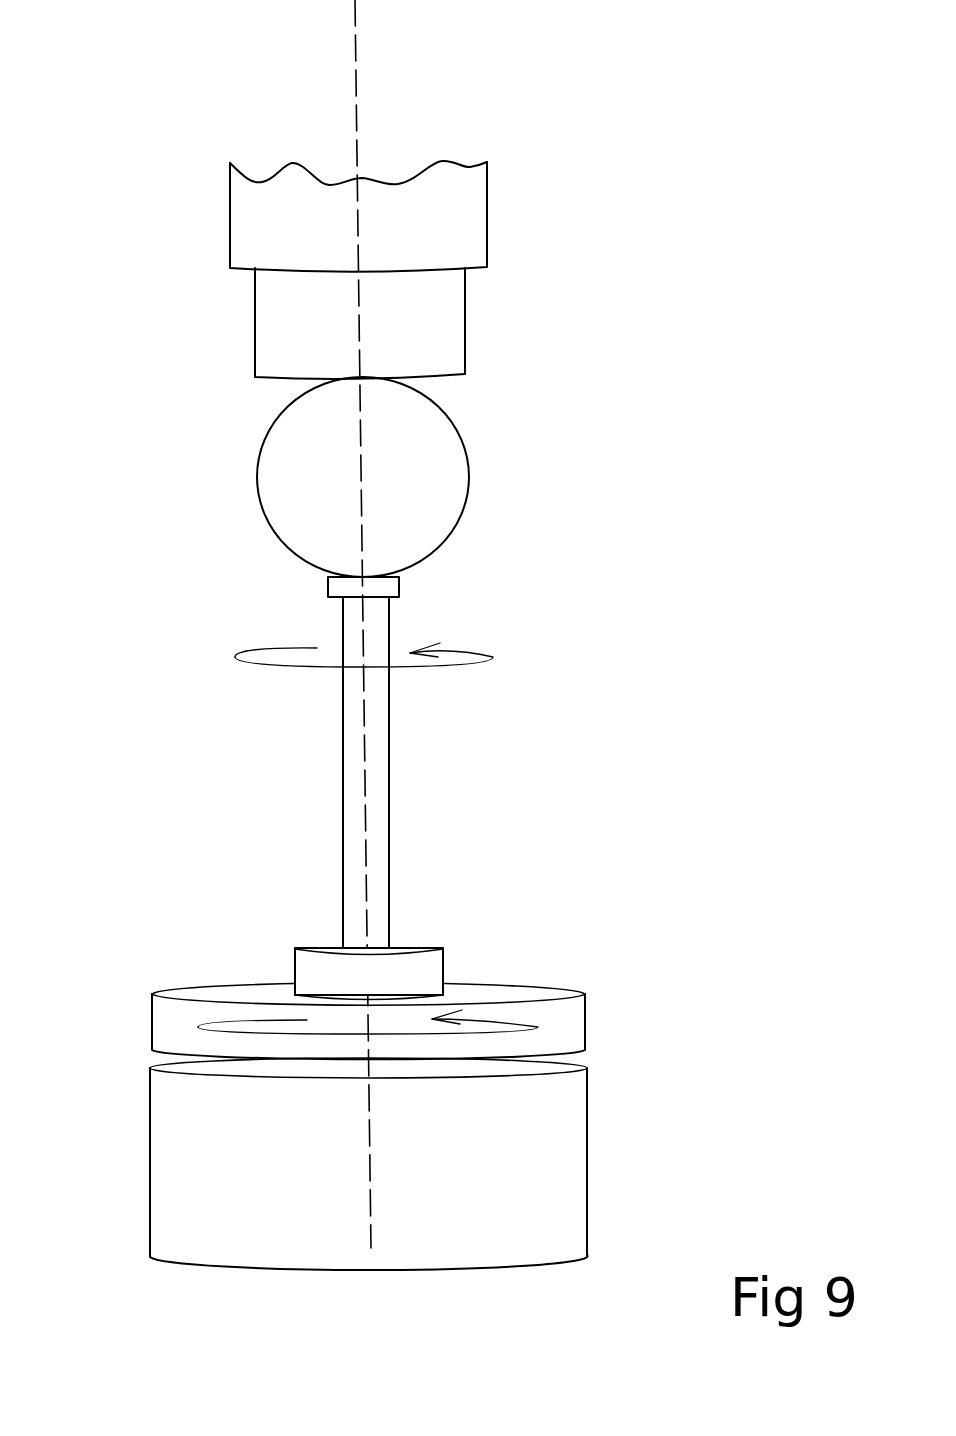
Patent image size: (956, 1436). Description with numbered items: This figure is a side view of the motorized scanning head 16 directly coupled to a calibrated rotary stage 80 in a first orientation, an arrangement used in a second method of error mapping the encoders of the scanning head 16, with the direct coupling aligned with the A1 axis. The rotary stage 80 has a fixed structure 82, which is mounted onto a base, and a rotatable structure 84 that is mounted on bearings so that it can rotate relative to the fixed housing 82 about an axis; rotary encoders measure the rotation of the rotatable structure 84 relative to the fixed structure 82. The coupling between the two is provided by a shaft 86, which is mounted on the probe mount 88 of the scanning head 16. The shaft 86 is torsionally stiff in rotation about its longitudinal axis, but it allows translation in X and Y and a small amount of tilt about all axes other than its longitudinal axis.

The motorized scanning head 16 is at (520, 482).
The rotary table / calibration artefact 80 is at (413, 1109).
The fixed structure 82 is at (185, 1180).
The rotatable structure 84 is at (173, 1037).
The shaft 86 is at (390, 806).
The probe mount 88 is at (328, 592).